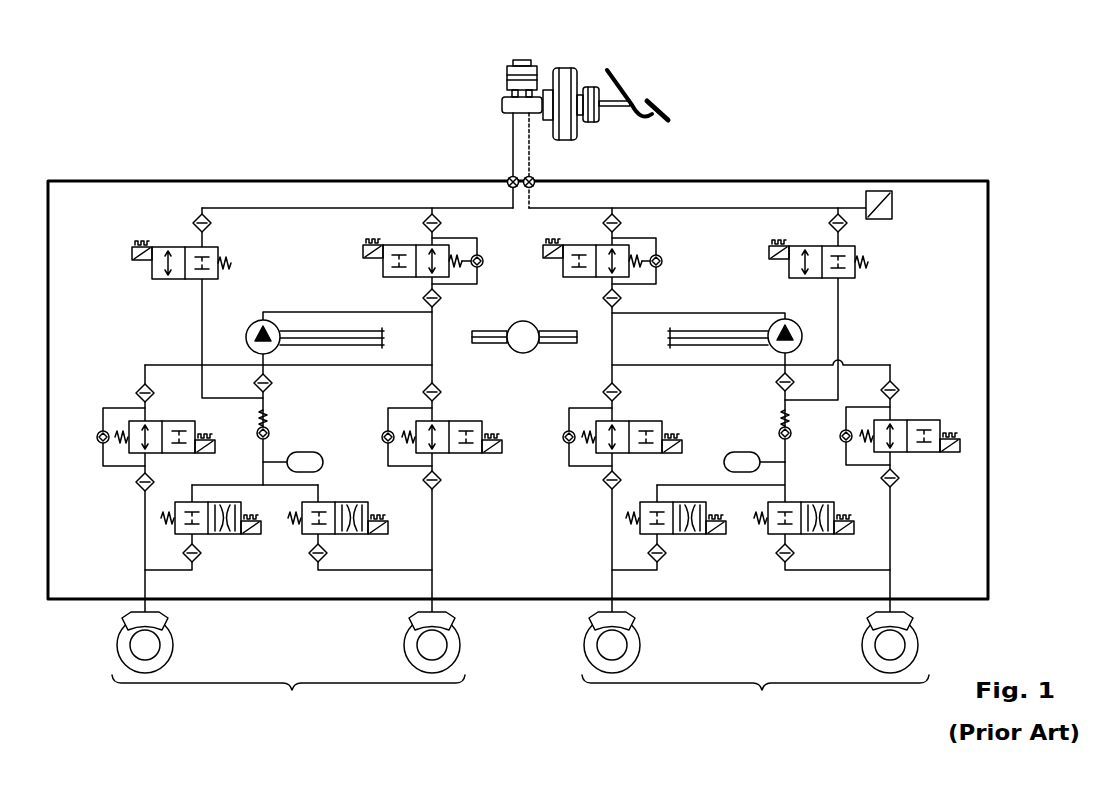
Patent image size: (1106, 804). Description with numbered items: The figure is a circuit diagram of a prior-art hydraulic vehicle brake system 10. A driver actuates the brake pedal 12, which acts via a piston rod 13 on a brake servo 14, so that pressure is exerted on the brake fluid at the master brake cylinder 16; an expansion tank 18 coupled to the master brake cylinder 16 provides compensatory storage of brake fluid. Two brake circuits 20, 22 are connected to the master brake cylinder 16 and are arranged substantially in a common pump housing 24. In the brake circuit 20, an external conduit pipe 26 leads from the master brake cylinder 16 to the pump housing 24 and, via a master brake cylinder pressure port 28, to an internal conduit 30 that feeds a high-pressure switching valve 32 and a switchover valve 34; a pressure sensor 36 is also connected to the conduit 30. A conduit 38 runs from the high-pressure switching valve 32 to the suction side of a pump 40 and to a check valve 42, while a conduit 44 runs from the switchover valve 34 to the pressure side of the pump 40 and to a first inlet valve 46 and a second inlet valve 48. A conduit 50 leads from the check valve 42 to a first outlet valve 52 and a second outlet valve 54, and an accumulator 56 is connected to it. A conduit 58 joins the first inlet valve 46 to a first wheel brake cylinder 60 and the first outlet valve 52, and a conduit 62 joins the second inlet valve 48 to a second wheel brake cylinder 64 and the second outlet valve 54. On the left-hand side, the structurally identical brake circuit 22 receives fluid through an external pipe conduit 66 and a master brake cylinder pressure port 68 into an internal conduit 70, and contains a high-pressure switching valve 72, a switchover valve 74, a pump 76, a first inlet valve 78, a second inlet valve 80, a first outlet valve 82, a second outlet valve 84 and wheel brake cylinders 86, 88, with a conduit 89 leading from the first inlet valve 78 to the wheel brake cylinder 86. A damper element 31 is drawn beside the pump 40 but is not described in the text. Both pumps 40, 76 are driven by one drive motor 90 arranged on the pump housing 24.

The hydraulic vehicle brake system 10 is at (84, 110).
The brake pedal 12 is at (658, 100).
The piston rod 13 is at (609, 76).
The brake servo 14 is at (562, 68).
The master brake cylinder 16 is at (502, 104).
The expansion tank 18 is at (506, 70).
The brake circuit 20 is at (755, 694).
The brake circuit 22 is at (288, 694).
The pump housing 24 is at (940, 181).
The conduit pipe 26 is at (531, 158).
The master brake cylinder pressure port 28 is at (535, 186).
The conduit 30 is at (752, 208).
The damping chamber 31 is at (772, 348).
The high-pressure switching valve 32 is at (812, 245).
The switchover valve 34 is at (598, 245).
The pressure sensor 36 is at (893, 205).
The conduit 38 is at (840, 302).
The pump 40 is at (802, 336).
The check valve 42 is at (792, 436).
The conduit 44 is at (603, 297).
The first inlet valve 46 is at (647, 421).
The second inlet valve 48 is at (928, 420).
The conduit 50 is at (787, 490).
The first outlet valve 52 is at (696, 536).
The second outlet valve 54 is at (830, 536).
The accumulator 56 is at (724, 462).
The conduit 58 is at (610, 526).
The first wheel brake cylinder 60 is at (635, 628).
The conduit 62 is at (893, 525).
The second wheel brake cylinder 64 is at (915, 628).
The external pipe conduit 66 is at (513, 141).
The master brake cylinder pressure port 68 is at (507, 180).
The internal conduit 70 is at (357, 208).
The high-pressure switching valve 72 is at (187, 280).
The switchover valve 74 is at (413, 244).
The pump 76 is at (246, 340).
The first inlet valve 78 is at (171, 421).
The second inlet valve 80 is at (469, 421).
The first outlet valve 82 is at (230, 536).
The second outlet valve 84 is at (350, 502).
The wheel brake cylinder 86 is at (168, 628).
The wheel brake cylinder 88 is at (455, 628).
The conduit 89 is at (144, 526).
The drive motor 90 is at (523, 320).